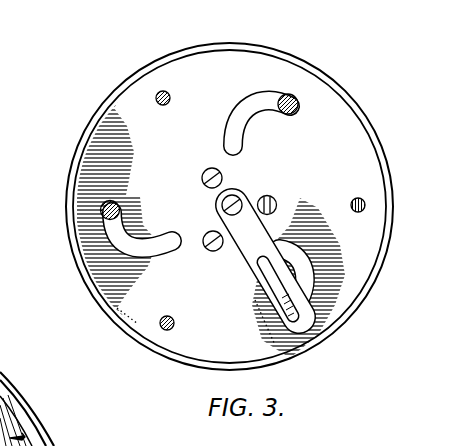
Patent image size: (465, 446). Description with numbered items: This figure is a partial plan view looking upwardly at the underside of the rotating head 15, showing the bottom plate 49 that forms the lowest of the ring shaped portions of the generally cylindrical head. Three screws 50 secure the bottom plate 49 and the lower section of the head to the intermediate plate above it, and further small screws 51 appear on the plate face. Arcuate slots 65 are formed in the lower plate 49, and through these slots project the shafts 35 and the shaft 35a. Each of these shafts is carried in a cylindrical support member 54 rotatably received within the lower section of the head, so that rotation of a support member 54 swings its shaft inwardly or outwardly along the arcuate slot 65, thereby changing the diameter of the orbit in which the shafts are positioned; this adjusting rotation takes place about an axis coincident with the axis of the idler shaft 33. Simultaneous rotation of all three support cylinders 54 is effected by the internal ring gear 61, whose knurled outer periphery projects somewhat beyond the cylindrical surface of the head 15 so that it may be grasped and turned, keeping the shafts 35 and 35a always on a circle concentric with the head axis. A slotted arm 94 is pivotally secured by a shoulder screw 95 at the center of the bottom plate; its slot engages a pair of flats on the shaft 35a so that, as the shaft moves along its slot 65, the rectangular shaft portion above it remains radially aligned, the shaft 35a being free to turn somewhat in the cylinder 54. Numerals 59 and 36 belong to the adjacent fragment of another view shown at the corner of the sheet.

The head 15 is at (362, 103).
The bottom plate 49 is at (158, 133).
The screws 51 is at (160, 93).
The internal ring gear 61 is at (68, 217).
The arcuate slots 65 is at (262, 92).
The shafts 35 is at (287, 114).
The shaft 35a is at (327, 337).
The screws 50 is at (273, 204).
The shoulder screw 95 is at (241, 196).
The slotted arm 94 is at (253, 258).
The part 59 is at (12, 365).
The part 36 is at (8, 392).
The idler shaft 33 is at (22, 410).
The cylindrical support member 54 is at (22, 437).